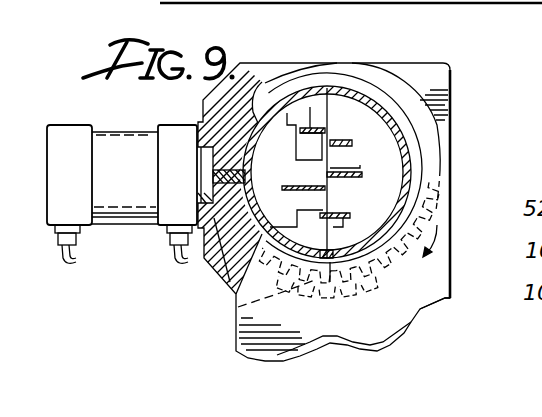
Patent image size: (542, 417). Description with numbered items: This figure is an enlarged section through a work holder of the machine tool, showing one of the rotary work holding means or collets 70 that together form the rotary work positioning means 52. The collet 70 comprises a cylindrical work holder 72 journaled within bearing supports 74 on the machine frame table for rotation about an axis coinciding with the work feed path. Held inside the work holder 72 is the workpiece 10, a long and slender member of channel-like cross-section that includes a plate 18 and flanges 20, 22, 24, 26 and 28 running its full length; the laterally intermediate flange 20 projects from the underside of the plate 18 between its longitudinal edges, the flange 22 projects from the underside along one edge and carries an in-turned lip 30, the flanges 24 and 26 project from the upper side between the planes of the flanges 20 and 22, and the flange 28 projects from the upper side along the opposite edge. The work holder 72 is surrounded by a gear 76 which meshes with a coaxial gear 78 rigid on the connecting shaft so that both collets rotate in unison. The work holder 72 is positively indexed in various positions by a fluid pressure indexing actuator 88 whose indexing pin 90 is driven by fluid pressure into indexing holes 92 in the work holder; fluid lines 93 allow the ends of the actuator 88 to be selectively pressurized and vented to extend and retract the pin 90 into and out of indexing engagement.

The workpiece 10 is at (334, 195).
The plate 18 is at (330, 160).
The laterally intermediate flange 20 is at (292, 186).
The flange 22 is at (317, 118).
The flange 24 is at (387, 120).
The flange 26 is at (362, 165).
The flange 28 is at (368, 222).
The in-turned lip 30 is at (284, 113).
The rotary work positioning means 52 is at (460, 162).
The rotary work holding means or collet 70 is at (462, 84).
The cylindrical work holder 72 is at (407, 110).
The bearing supports 74 is at (450, 240).
The work holder gear 76 is at (398, 283).
The coaxial gear 78 is at (238, 308).
The fluid pressure indexing actuator 88 is at (137, 133).
The indexing pin 90 is at (223, 174).
The indexing holes 92 is at (340, 100).
The fluid lines 93 is at (58, 256).